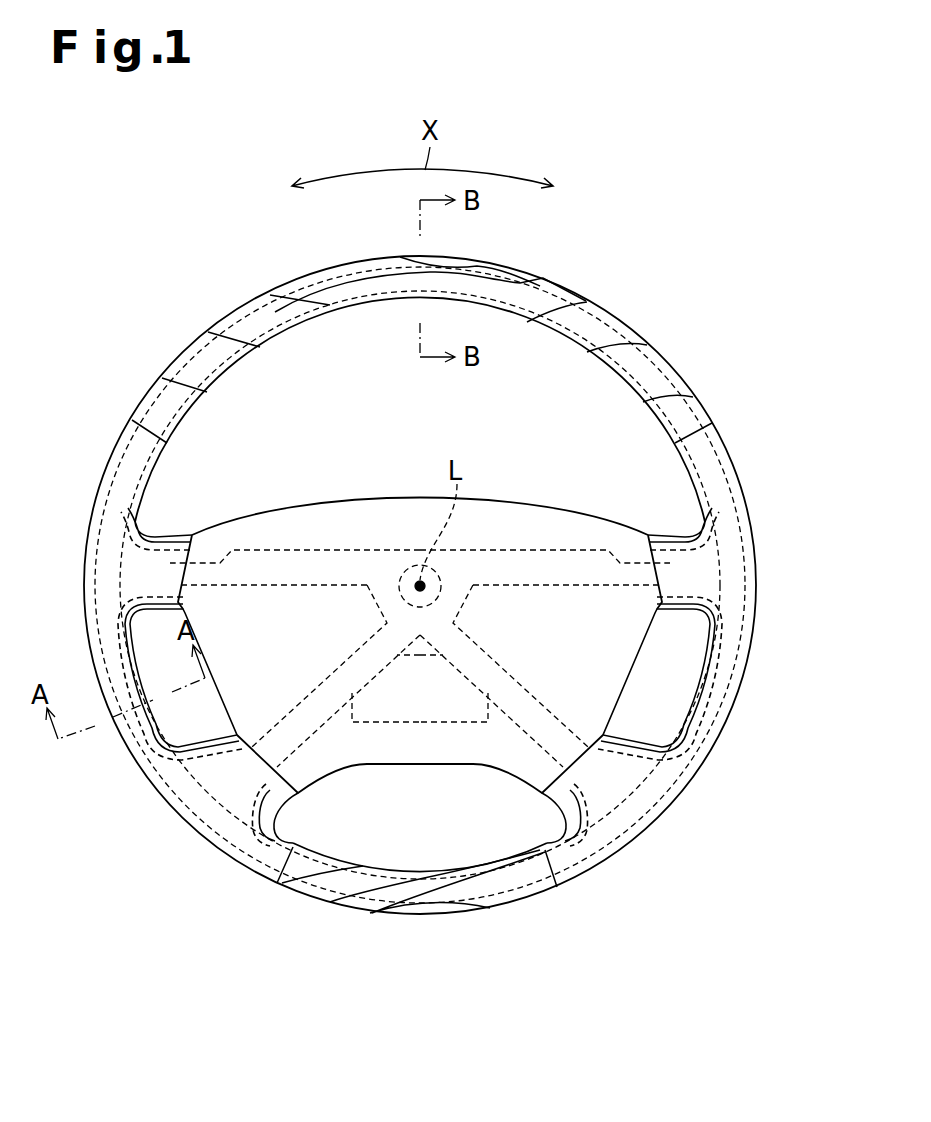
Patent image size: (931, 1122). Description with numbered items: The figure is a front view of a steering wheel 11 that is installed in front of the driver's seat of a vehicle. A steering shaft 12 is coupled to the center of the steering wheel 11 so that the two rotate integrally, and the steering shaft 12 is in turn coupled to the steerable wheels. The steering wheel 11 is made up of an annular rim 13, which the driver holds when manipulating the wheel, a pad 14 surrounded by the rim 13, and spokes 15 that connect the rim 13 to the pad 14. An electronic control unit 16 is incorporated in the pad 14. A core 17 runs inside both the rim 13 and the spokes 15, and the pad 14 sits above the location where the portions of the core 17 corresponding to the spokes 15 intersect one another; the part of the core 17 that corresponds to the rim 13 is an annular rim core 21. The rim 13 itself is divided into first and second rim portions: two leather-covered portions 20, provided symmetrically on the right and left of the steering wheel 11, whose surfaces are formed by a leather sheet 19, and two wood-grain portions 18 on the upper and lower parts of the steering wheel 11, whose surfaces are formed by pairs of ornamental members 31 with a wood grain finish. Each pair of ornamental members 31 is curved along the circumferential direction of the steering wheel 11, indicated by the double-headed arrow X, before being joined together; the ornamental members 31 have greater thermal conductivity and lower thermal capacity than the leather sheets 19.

The steering wheel 11 is at (126, 904).
The steering shaft 12 is at (418, 575).
The rim 13 is at (727, 449).
The pad 14 is at (313, 503).
The spokes 15 is at (177, 534).
The electronic control unit (ECU) 16 is at (410, 724).
The core 17 is at (573, 550).
The wood-grain portions 18 is at (610, 313).
The leather sheet 19 is at (84, 575).
The leather-covered portions 20 is at (85, 608).
The rim core 21 is at (757, 546).
The ornamental members 31 is at (518, 277).